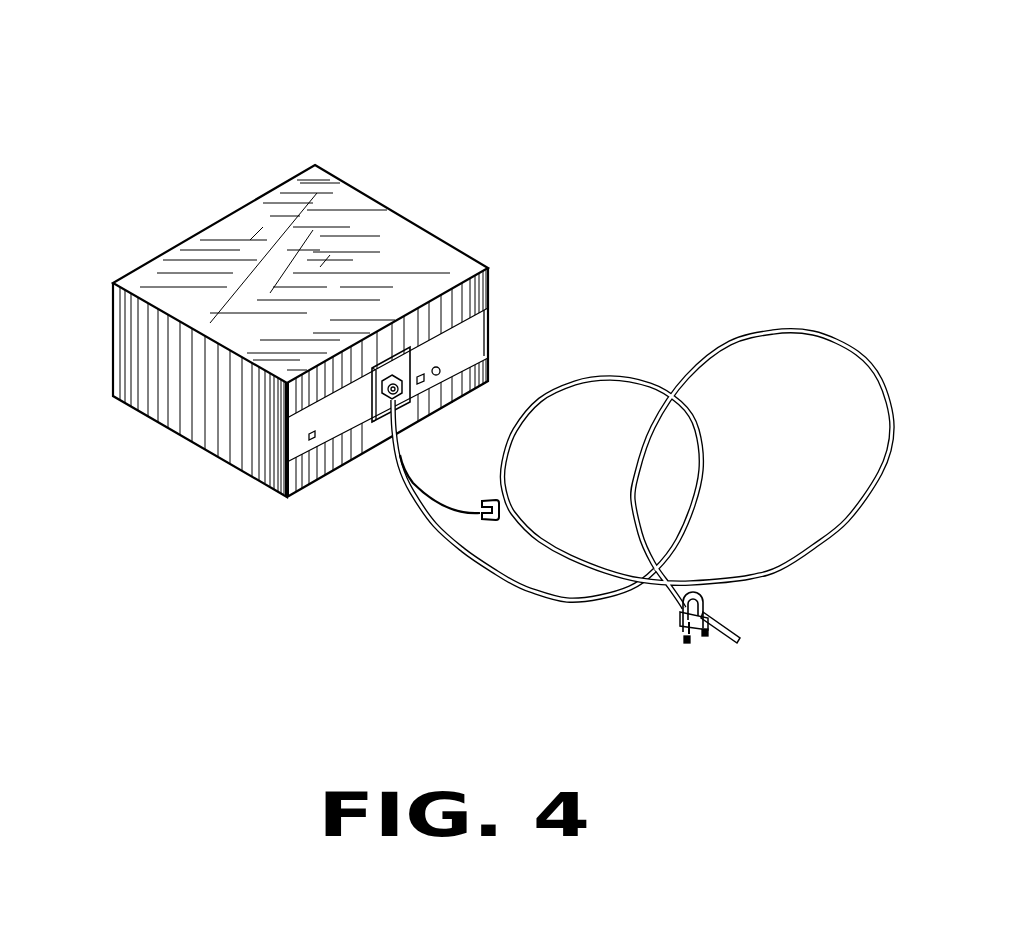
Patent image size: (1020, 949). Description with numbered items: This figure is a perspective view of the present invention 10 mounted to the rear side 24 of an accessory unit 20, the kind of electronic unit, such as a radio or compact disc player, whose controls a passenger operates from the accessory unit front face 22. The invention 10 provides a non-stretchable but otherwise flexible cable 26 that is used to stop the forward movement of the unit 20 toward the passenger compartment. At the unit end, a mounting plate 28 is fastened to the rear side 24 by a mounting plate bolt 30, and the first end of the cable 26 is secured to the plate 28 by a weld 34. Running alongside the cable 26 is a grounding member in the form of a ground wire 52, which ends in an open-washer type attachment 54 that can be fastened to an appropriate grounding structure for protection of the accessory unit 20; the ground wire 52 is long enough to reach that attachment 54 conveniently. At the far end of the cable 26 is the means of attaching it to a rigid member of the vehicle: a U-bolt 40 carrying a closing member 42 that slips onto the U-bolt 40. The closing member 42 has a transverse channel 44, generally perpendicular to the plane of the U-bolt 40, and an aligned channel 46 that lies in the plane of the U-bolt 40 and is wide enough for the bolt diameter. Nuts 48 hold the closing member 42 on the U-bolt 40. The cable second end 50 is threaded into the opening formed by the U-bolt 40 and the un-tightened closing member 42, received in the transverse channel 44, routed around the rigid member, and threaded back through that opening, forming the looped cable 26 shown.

The present invention 10 is at (772, 232).
The accessory unit 20 is at (408, 221).
The accessory unit front face 22 is at (112, 340).
The rear side 24 is at (322, 463).
The cable 26 is at (768, 333).
The mounting plate 28 is at (411, 350).
The mounting plate bolt 30 is at (488, 349).
The weld 34 is at (387, 417).
The U-bolt 40 is at (703, 597).
The closing member 42 is at (713, 618).
The transverse channel 44 is at (693, 633).
The aligned channel 46 is at (682, 615).
The nuts 48 is at (683, 637).
The cable second end 50 is at (723, 642).
The ground wire 52 is at (453, 513).
The open-washer type attachment 54 is at (482, 503).